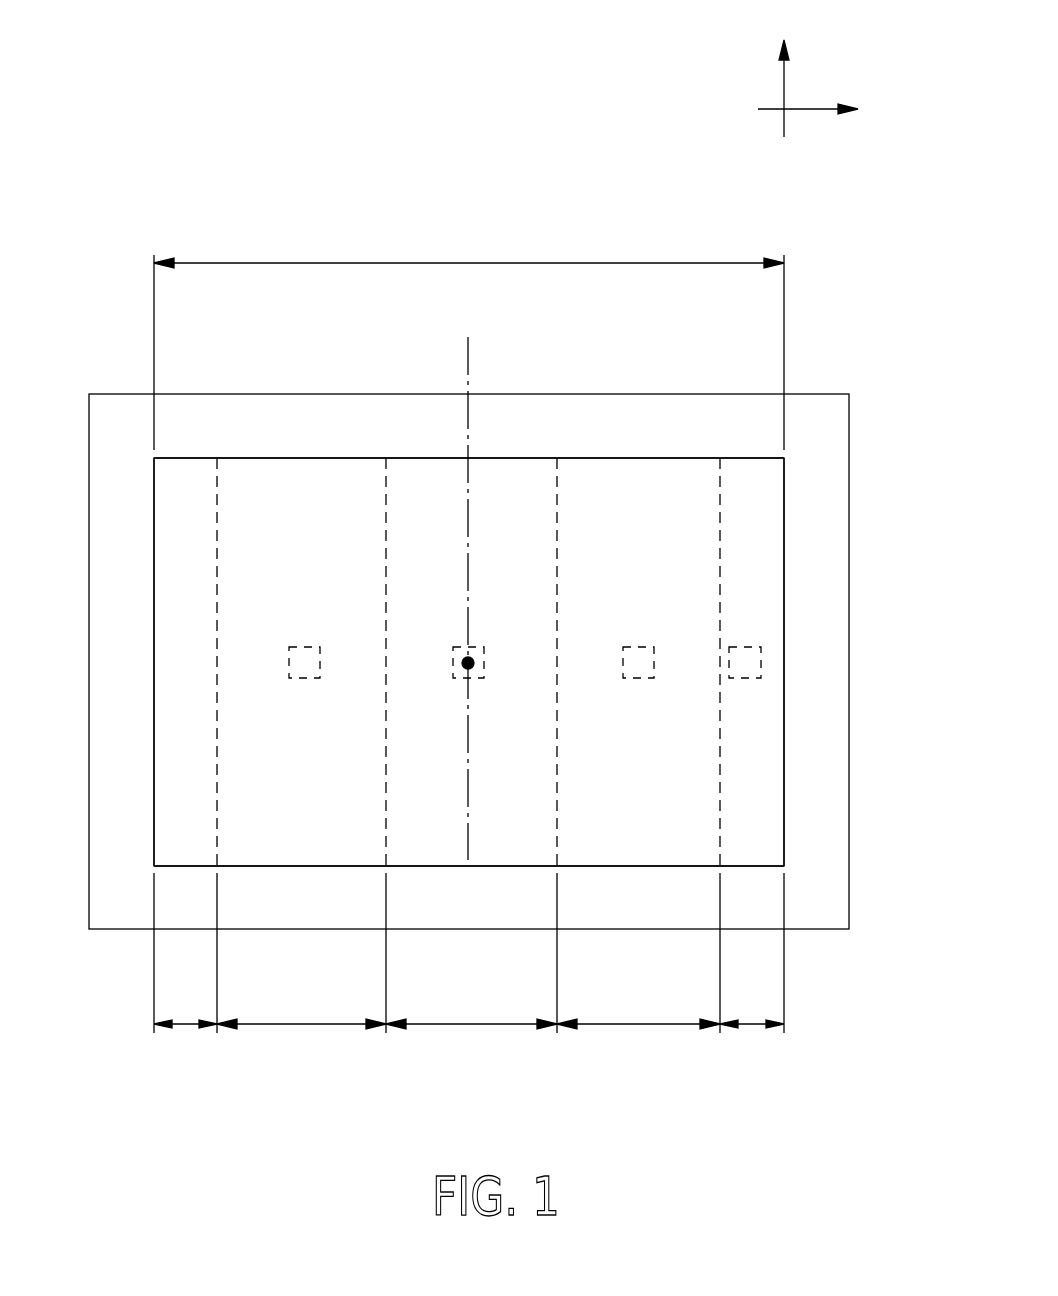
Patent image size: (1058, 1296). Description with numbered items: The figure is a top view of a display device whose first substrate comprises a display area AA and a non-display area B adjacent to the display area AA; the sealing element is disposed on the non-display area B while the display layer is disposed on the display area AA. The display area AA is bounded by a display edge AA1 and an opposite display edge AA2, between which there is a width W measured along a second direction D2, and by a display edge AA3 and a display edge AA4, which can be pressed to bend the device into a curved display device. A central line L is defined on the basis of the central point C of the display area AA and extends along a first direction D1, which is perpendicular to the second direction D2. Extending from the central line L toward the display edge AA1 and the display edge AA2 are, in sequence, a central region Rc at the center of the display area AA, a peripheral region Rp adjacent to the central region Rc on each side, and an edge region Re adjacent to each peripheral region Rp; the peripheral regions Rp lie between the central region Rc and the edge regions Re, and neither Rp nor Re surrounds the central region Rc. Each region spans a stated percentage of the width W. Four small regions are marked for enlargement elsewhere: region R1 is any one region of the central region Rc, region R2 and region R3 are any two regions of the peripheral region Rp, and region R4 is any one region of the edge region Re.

The first direction D1 is at (788, 70).
The second direction D2 is at (829, 114).
The non-display area B is at (833, 627).
The display area AA is at (773, 714).
The display edge AA1 is at (784, 556).
The display edge AA2 is at (154, 603).
The display edge AA3 is at (758, 458).
The display edge AA4 is at (755, 867).
The central line L is at (468, 582).
The central point C is at (484, 664).
The region R1 is at (460, 647).
The region R2 is at (312, 647).
The region R3 is at (632, 647).
The region R4 is at (749, 647).
The width W is at (469, 342).
The edge region Re is at (469, 1010).
The peripheral region Rp is at (468, 1009).
The central region Rc is at (471, 1010).